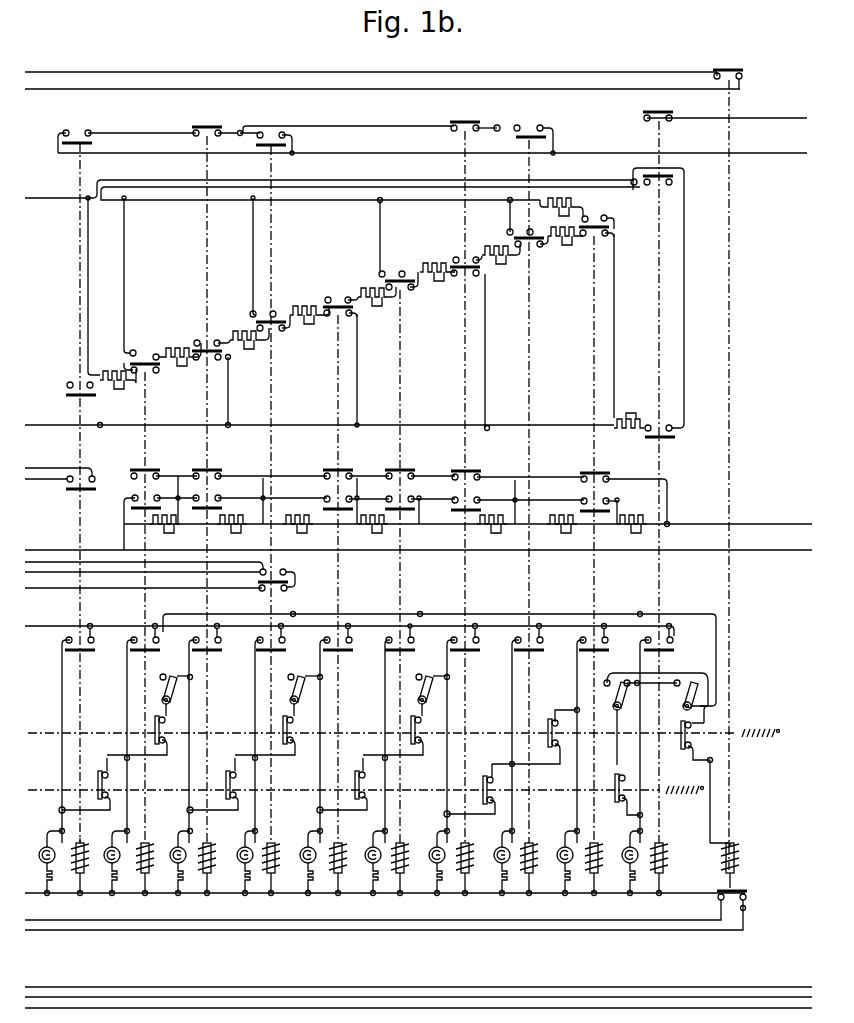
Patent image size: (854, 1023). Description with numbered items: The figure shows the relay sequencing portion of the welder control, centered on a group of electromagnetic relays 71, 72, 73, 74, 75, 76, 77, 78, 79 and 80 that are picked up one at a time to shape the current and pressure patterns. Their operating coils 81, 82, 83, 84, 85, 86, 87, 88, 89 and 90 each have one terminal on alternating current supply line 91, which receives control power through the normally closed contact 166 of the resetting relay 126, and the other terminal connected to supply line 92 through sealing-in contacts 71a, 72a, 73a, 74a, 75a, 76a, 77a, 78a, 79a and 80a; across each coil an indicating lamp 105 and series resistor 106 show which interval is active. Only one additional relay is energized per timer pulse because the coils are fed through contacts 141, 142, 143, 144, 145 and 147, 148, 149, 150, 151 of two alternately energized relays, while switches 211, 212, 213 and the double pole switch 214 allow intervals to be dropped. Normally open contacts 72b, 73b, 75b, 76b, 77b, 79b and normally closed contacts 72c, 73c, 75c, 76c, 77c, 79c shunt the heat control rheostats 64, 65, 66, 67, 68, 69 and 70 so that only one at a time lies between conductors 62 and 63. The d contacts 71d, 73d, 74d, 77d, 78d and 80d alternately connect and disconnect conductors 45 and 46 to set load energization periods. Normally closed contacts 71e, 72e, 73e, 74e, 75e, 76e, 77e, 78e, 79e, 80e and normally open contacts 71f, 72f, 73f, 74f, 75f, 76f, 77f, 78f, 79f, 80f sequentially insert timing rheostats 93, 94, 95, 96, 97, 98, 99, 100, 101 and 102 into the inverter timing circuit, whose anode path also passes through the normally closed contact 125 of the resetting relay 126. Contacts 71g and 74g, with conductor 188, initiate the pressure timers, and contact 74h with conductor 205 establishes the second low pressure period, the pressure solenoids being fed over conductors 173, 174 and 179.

The conductor 45 is at (797, 156).
The conductor 46 is at (797, 118).
The conductor 62 is at (795, 551).
The conductor 63 is at (802, 524).
The heat control rheostat 64 is at (175, 531).
The heat control rheostat 65 is at (245, 531).
The heat control rheostat 66 is at (310, 531).
The heat control rheostat 67 is at (366, 531).
The heat control rheostat 68 is at (474, 530).
The heat control rheostat 69 is at (555, 531).
The heat control rheostat 70 is at (624, 531).
The electromagnetic relay 71 is at (78, 439).
The electromagnetic relay 72 is at (143, 439).
The electromagnetic relay 73 is at (205, 439).
The electromagnetic relay 74 is at (269, 439).
The electromagnetic relay 75 is at (336, 439).
The electromagnetic relay 76 is at (398, 439).
The electromagnetic relay 77 is at (463, 439).
The electromagnetic relay 78 is at (527, 439).
The electromagnetic relay 79 is at (592, 439).
The electromagnetic relay 80 is at (662, 458).
The sealing-in contact 71a is at (92, 645).
The sealing-in contact 72a is at (156, 645).
The sealing-in contact 73a is at (218, 645).
The sealing-in contact 74a is at (286, 645).
The sealing-in contact 75a is at (348, 645).
The sealing-in contact 76a is at (412, 645).
The sealing-in contact 77a is at (478, 645).
The sealing-in contact 78a is at (541, 645).
The sealing-in contact 79a is at (608, 645).
The sealing-in contact 80a is at (672, 645).
The normally open contact 72b is at (134, 498).
The normally open contact 73b is at (220, 500).
The normally open contact 75b is at (326, 500).
The normally open contact 76b is at (390, 500).
The normally open contact 77b is at (480, 502).
The normally open contact 79b is at (583, 503).
The normally closed contact 72c is at (132, 476).
The normally closed contact 73c is at (220, 476).
The normally closed contact 75c is at (350, 476).
The normally closed contact 76c is at (412, 476).
The normally closed contact 77c is at (478, 477).
The normally closed contact 79c is at (606, 479).
The d contact 71d is at (87, 131).
The d contact 73d is at (195, 134).
The d contact 74d is at (285, 135).
The d contact 77d is at (453, 131).
The d contact 78d is at (507, 131).
The d contact 80d is at (651, 123).
The normally closed contact 71e is at (68, 398).
The normally closed contact 72e is at (156, 372).
The normally closed contact 73e is at (222, 359).
The normally closed contact 74e is at (282, 330).
The normally closed contact 75e is at (351, 314).
The normally closed contact 76e is at (409, 289).
The normally closed contact 77e is at (478, 275).
The normally closed contact 78e is at (540, 248).
The normally closed contact 79e is at (606, 236).
The normally closed contact 80e is at (672, 185).
The normally open contact 71f is at (66, 385).
The normally open contact 72f is at (134, 350).
The normally open contact 73f is at (212, 340).
The normally open contact 74f is at (280, 312).
The normally open contact 75f is at (332, 300).
The normally open contact 76f is at (387, 270).
The normally open contact 77f is at (456, 262).
The normally open contact 78f is at (510, 232).
The normally open contact 79f is at (608, 216).
The normally open contact 80f is at (674, 429).
The normally open contact 71g is at (66, 486).
The normally closed contact 74g is at (286, 590).
The normally open contact 74h is at (288, 572).
The operating coil 81 is at (86, 870).
The operating coil 82 is at (151, 870).
The operating coil 83 is at (214, 870).
The operating coil 84 is at (278, 870).
The operating coil 85 is at (342, 870).
The operating coil 86 is at (406, 870).
The operating coil 87 is at (472, 870).
The operating coil 88 is at (536, 870).
The operating coil 89 is at (600, 870).
The operating coil 90 is at (664, 870).
The alternating current supply line 91 is at (272, 894).
The alternating current supply line 92 is at (42, 622).
The timing rheostat 93 is at (98, 392).
The timing rheostat 94 is at (182, 348).
The timing rheostat 95 is at (242, 334).
The timing rheostat 96 is at (312, 319).
The timing rheostat 97 is at (368, 294).
The timing rheostat 98 is at (440, 277).
The timing rheostat 99 is at (494, 266).
The timing rheostat 100 is at (570, 241).
The timing rheostat 101 is at (576, 201).
The timing rheostat 102 is at (636, 431).
The indicating lamp 105 is at (48, 842).
The series resistor 106 is at (60, 902).
The normally closed contact 125 is at (743, 77).
The resetting relay 126 is at (732, 459).
The contact 141 is at (106, 802).
The contact 142 is at (232, 802).
The contact 143 is at (358, 802).
The contact 144 is at (490, 804).
The contact 145 is at (618, 756).
The contact 147 is at (162, 744).
The contact 148 is at (290, 744).
The contact 149 is at (418, 744).
The contact 150 is at (560, 750).
The contact 151 is at (688, 750).
The normally closed contact 166 is at (718, 898).
The conductor 173 is at (42, 987).
The conductor 174 is at (86, 997).
The conductor 179 is at (44, 1008).
The conductor 188 is at (44, 562).
The conductor 205 is at (38, 572).
The single pole double throw switch 211 is at (163, 684).
The single pole double throw switch 212 is at (290, 684).
The single pole double throw switch 213 is at (420, 684).
The double pole double throw switch 214 is at (676, 696).